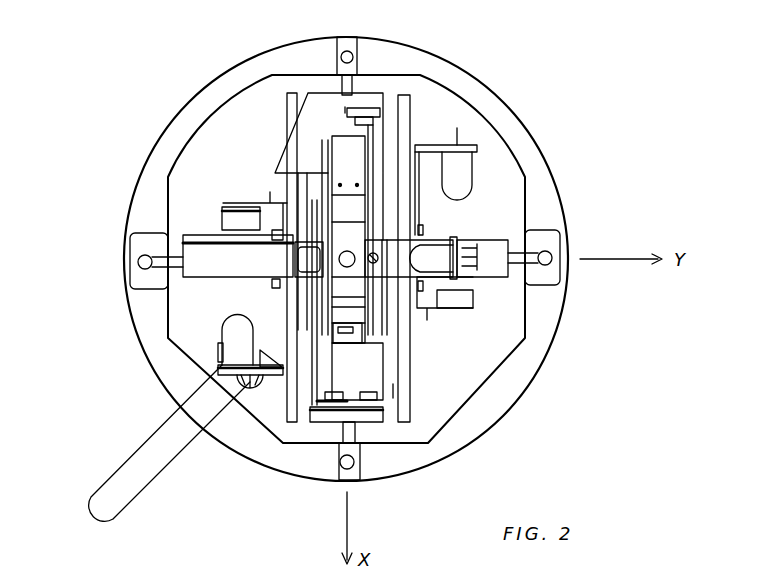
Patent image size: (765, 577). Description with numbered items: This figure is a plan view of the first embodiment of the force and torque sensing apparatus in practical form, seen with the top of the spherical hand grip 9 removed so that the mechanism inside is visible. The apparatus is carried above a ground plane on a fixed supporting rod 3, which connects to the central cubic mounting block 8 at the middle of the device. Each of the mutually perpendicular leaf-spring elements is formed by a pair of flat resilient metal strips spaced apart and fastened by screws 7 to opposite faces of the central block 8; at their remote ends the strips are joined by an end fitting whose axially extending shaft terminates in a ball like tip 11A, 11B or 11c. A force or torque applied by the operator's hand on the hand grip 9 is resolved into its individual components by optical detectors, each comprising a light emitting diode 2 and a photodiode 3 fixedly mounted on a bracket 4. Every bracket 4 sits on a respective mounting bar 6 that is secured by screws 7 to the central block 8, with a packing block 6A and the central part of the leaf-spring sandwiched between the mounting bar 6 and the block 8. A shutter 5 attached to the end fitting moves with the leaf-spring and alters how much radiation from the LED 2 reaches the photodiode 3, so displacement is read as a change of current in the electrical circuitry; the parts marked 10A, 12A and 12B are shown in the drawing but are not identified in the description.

The light emitting diode 2 is at (465, 170).
The photodiode 3 is at (228, 218).
The bracket 4 is at (245, 203).
The shutter 5 is at (293, 157).
The mounting bar 6 is at (292, 103).
The packing block 6A is at (400, 225).
The screws 7 is at (272, 283).
The central mounting block 8 is at (372, 227).
The spherical hand grip 9 is at (520, 142).
The bottom housing 10A is at (388, 325).
The ball like tip 11A is at (354, 55).
The ball like tip 11B is at (550, 252).
The ball like tip 11c is at (343, 254).
The pin bracket 12A is at (337, 48).
The pin bracket 12B is at (130, 268).